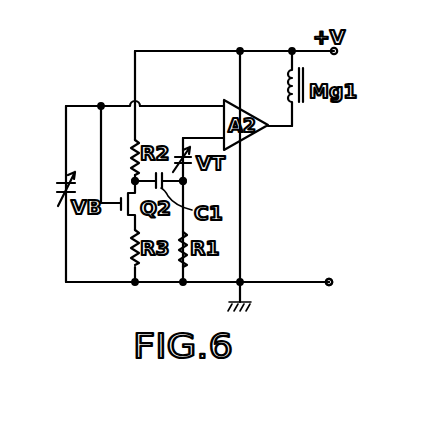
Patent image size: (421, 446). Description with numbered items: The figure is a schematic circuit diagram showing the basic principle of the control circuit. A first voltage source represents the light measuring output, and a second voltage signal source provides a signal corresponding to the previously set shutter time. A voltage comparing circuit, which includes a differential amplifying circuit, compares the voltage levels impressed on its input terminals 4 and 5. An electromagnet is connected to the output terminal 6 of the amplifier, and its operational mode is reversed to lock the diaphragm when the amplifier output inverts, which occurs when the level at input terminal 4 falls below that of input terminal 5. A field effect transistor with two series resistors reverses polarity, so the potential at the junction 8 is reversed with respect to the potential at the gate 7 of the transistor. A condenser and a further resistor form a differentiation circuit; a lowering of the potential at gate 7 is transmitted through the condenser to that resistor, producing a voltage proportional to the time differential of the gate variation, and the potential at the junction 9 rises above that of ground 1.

The ground 1 is at (284, 282).
The input terminal 4 is at (190, 106).
The input terminal 5 is at (198, 138).
The output terminal 6 is at (283, 126).
The gate 7 is at (108, 204).
The junction 8 is at (133, 180).
The junction 9 is at (185, 182).